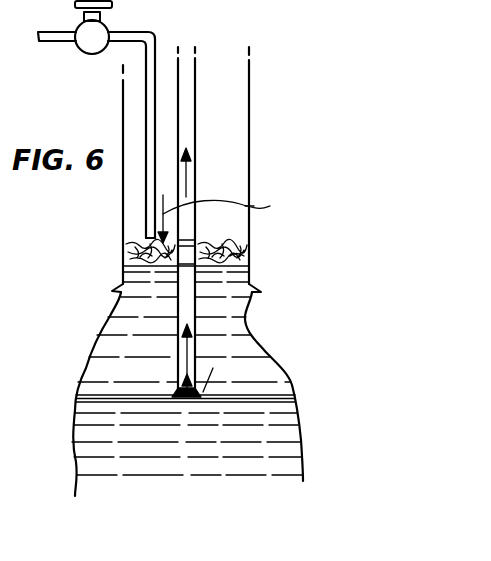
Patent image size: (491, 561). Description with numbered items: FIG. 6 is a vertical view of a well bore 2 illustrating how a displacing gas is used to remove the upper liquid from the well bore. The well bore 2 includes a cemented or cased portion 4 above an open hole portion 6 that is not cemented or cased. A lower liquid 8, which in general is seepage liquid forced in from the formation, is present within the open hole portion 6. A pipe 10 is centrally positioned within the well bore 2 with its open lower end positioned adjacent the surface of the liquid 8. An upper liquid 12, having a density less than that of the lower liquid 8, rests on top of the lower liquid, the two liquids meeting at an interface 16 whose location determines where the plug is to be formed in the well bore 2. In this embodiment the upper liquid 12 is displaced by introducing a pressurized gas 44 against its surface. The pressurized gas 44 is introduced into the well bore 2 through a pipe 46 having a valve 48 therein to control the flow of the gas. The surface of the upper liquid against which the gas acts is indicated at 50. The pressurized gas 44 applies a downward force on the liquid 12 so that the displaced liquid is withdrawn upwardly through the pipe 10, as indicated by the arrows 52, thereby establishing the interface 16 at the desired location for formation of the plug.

The well bore 2 is at (260, 181).
The cemented or cased portion 4 is at (250, 83).
The open hole portion 6 is at (268, 330).
The liquid 8 is at (270, 443).
The pipe 10 is at (195, 145).
The liquid 12 is at (197, 297).
The interface 16 is at (255, 395).
The pressurized gas 44 is at (123, 249).
The pipe 46 is at (153, 35).
The valve 48 is at (89, 48).
The liquid level 50 is at (233, 204).
The arrows 52 is at (170, 386).